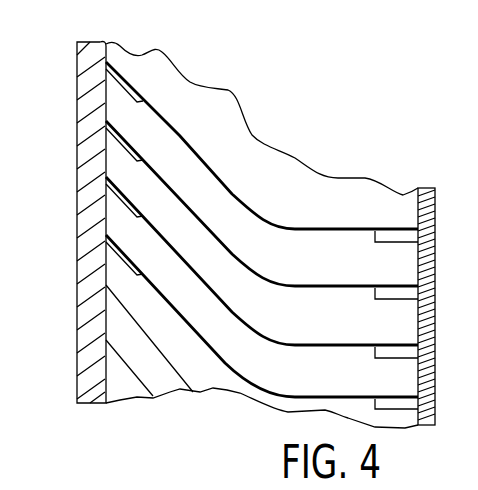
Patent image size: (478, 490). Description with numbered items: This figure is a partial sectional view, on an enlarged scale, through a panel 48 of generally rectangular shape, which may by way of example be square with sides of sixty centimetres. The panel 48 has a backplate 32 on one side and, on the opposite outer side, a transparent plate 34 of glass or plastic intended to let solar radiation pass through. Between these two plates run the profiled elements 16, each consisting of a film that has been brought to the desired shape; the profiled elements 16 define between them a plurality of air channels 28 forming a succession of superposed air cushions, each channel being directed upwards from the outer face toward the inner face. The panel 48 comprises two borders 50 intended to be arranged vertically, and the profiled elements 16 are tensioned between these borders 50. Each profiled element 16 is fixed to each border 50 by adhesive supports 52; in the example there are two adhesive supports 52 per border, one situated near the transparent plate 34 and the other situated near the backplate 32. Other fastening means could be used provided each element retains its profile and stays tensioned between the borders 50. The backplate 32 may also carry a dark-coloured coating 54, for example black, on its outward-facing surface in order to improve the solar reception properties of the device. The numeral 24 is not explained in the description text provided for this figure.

The profiled element 16 is at (283, 238).
The heat exchanger 24 is at (230, 486).
The air channel 28 is at (239, 232).
The backplate 32 is at (86, 283).
The transparent plate 34 is at (418, 428).
The panel 48 is at (57, 136).
The border 50 is at (334, 200).
The adhesive support 52 is at (133, 90).
The dark-coloured coating 54 is at (107, 382).